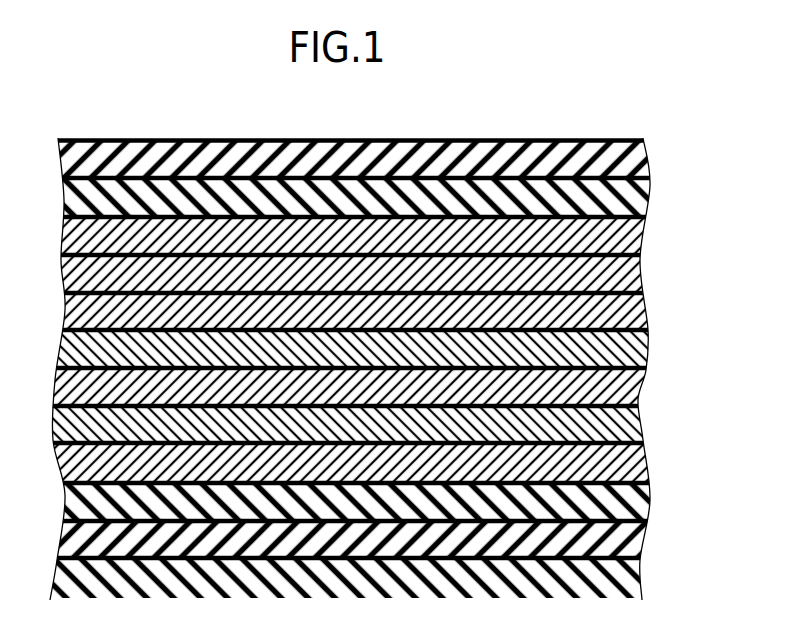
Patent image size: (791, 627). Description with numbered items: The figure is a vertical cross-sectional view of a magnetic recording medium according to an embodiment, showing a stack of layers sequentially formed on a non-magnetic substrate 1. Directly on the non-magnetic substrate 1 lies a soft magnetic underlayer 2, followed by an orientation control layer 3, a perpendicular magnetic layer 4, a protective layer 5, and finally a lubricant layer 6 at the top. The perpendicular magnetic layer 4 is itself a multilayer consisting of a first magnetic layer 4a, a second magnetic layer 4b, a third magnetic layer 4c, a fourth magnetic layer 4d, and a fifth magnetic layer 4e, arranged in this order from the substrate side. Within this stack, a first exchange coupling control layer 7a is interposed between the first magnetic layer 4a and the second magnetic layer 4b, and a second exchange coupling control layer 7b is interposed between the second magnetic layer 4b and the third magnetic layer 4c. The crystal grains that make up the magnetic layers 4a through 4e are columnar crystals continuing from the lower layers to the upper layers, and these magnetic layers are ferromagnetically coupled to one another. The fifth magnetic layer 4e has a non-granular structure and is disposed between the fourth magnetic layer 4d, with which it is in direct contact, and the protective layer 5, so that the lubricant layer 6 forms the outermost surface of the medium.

The non-magnetic substrate 1 is at (632, 579).
The soft magnetic underlayer 2 is at (634, 541).
The orientation control layer 3 is at (636, 504).
The perpendicular magnetic layer 4 is at (401, 350).
The first magnetic layer 4a is at (379, 463).
The second magnetic layer 4b is at (634, 390).
The third magnetic layer 4c is at (634, 314).
The fourth magnetic layer 4d is at (634, 277).
The fifth magnetic layer 4e is at (634, 239).
The protective layer 5 is at (634, 201).
The lubricant layer 6 is at (632, 162).
The first exchange coupling control layer 7a is at (632, 428).
The second exchange coupling control layer 7b is at (636, 352).